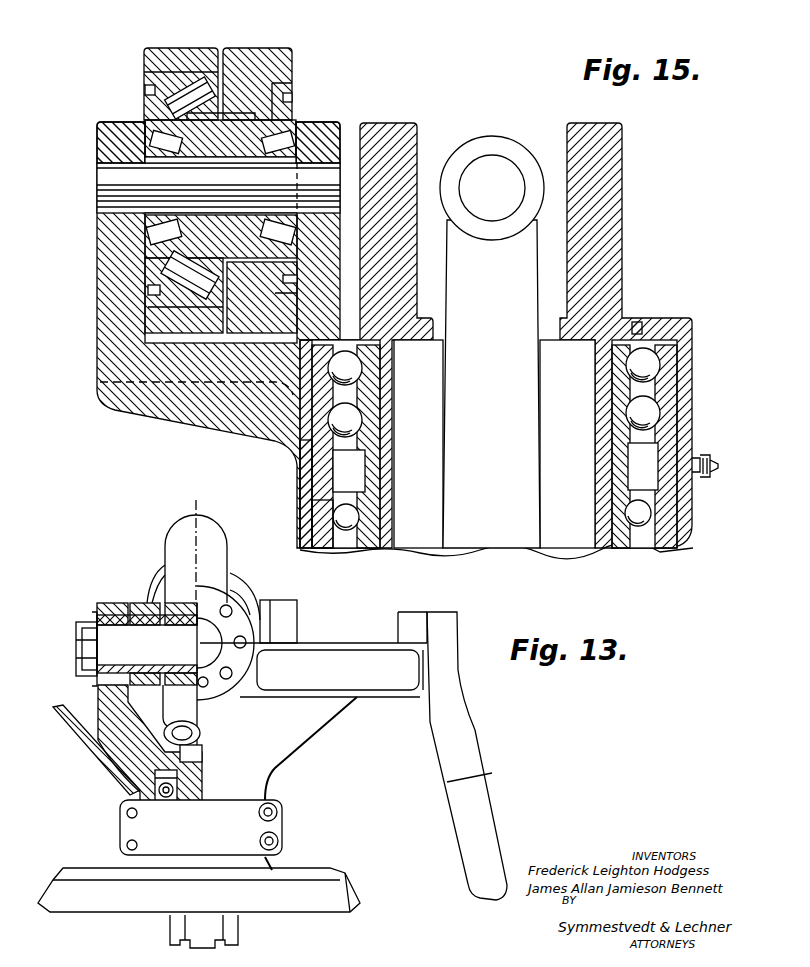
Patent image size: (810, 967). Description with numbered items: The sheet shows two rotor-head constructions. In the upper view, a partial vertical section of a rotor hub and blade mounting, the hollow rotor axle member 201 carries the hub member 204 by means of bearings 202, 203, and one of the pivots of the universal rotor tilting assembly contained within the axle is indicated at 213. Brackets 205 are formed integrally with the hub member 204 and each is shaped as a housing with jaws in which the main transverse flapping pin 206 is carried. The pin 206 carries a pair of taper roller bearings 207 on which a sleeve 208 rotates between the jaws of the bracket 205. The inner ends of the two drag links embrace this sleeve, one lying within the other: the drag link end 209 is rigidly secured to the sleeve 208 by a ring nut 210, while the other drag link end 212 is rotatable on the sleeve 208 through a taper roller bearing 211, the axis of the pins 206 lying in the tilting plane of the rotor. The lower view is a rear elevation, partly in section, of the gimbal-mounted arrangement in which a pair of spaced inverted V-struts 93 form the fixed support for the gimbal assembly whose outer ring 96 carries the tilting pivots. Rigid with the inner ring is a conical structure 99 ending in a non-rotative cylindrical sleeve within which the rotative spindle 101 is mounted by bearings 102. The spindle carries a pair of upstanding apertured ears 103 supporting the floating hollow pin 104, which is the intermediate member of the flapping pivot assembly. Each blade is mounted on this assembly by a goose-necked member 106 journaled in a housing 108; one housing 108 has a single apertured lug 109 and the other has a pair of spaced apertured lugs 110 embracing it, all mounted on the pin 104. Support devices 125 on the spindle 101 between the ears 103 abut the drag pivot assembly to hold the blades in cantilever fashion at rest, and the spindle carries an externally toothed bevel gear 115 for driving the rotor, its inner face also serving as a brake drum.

In FIG. 15, the rotor axle member 201 is at (388, 550).
In FIG. 15, the bearing 202 is at (333, 547).
In FIG. 15, the bearing 203 is at (357, 410).
In FIG. 15, the hub member 204 is at (300, 518).
In FIG. 15, the bracket 205 is at (150, 366).
In FIG. 15, the main transverse flapping pin 206 is at (100, 186).
In FIG. 15, the taper roller bearings 207 is at (140, 145).
In FIG. 15, the sleeve 208 is at (290, 150).
In FIG. 15, the drag link end 209 is at (253, 58).
In FIG. 15, the ring nut 210 is at (272, 112).
In FIG. 15, the taper roller bearing 211 is at (193, 96).
In FIG. 15, the drag link end 212 is at (178, 50).
In FIG. 15, the pivot 213 is at (485, 172).
In FIG. 13, the inverted V-struts 93 is at (481, 815).
In FIG. 13, the outer ring 96 is at (387, 678).
In FIG. 13, the conical structure 99 is at (57, 713).
In FIG. 13, the rotative spindle 101 is at (190, 830).
In FIG. 13, the bearings 102 is at (158, 790).
In FIG. 13, the upstanding apertured ears 103 is at (113, 728).
In FIG. 13, the floating hollow pin 104 is at (113, 628).
In FIG. 13, the goose-necked member 106 is at (212, 546).
In FIG. 13, the housing 108 is at (177, 573).
In FIG. 13, the single apertured lug 109 is at (178, 598).
In FIG. 13, the spaced apertured lugs 110 is at (140, 605).
In FIG. 13, the externally toothed bevel gear 115 is at (338, 893).
In FIG. 13, the support devices 125 is at (193, 741).